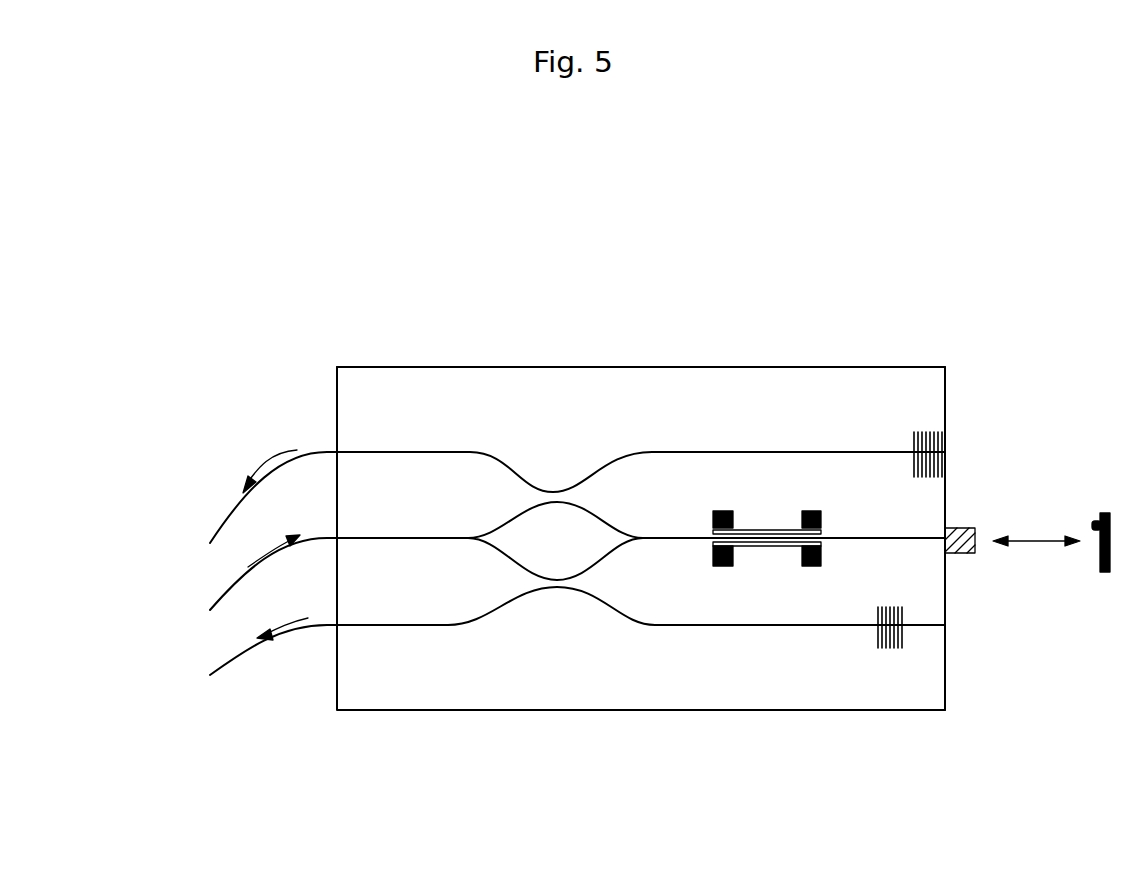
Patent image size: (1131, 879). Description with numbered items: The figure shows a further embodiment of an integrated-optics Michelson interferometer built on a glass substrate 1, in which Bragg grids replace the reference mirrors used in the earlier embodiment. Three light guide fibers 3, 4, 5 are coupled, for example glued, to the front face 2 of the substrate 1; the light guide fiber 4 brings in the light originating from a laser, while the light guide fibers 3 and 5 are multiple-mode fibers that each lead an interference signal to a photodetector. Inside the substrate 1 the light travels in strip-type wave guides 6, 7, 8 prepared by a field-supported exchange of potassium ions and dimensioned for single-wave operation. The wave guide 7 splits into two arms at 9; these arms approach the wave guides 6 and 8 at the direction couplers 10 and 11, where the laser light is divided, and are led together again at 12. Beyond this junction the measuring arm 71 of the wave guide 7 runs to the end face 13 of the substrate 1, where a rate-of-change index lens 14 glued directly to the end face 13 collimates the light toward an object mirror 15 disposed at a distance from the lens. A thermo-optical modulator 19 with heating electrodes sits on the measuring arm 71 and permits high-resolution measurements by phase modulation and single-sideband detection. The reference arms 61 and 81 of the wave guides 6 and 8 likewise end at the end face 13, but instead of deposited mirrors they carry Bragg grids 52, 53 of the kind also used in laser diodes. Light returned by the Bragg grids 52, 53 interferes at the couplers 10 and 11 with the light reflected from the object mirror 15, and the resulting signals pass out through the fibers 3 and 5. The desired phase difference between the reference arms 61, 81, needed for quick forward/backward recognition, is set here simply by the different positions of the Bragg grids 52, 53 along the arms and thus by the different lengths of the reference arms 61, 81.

The glass substrate 1 is at (672, 375).
The front face 2 is at (337, 405).
The light guide fiber 3 is at (232, 517).
The light guide fiber 4 is at (230, 598).
The light guide fiber 5 is at (235, 657).
The wave guide 6 is at (411, 450).
The wave guide 7 is at (400, 535).
The wave guide 8 is at (392, 628).
The split point 9 is at (462, 541).
The direction coupler 10 is at (556, 490).
The direction coupler 11 is at (556, 590).
The junction point 12 is at (644, 535).
The end face 13 is at (947, 382).
The rate-of-change index lens 14 is at (967, 528).
The object mirror 15 is at (1097, 560).
The thermo-optical modulator 19 is at (808, 567).
The Bragg grid 52 is at (947, 436).
The Bragg grid 53 is at (890, 612).
The reference arm 61 is at (777, 450).
The measuring arm 71 is at (859, 536).
The reference arm 81 is at (712, 628).